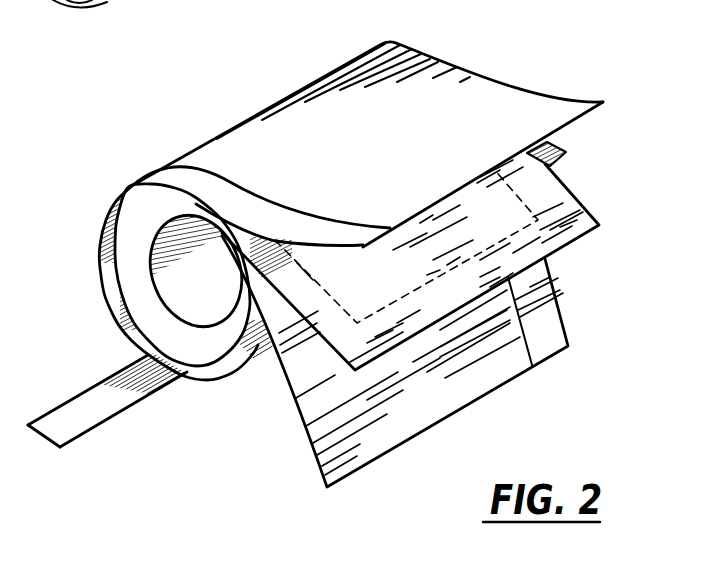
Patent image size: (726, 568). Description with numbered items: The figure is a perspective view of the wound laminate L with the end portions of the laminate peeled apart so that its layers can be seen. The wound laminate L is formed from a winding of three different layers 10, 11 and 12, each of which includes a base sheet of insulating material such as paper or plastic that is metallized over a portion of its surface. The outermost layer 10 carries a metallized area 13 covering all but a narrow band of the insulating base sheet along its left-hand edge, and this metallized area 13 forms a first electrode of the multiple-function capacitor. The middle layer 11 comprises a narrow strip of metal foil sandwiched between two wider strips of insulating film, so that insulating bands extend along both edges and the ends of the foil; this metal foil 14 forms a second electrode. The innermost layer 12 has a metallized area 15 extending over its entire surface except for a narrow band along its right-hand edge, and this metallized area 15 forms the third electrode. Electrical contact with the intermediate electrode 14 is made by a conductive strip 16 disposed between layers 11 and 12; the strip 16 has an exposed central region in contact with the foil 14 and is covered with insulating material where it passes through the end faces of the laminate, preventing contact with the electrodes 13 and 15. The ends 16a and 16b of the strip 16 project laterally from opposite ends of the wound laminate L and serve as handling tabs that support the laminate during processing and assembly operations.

The wound laminate L is at (210, 118).
The outermost layer 10 is at (541, 82).
The middle layer 11 is at (577, 253).
The innermost layer 12 is at (505, 412).
The metallized area 13 is at (453, 98).
The metal foil 14 is at (600, 213).
The metallized area 15 is at (382, 443).
The conductive strip 16 is at (137, 424).
The end of strip 16a is at (63, 447).
The end of strip 16b is at (566, 152).